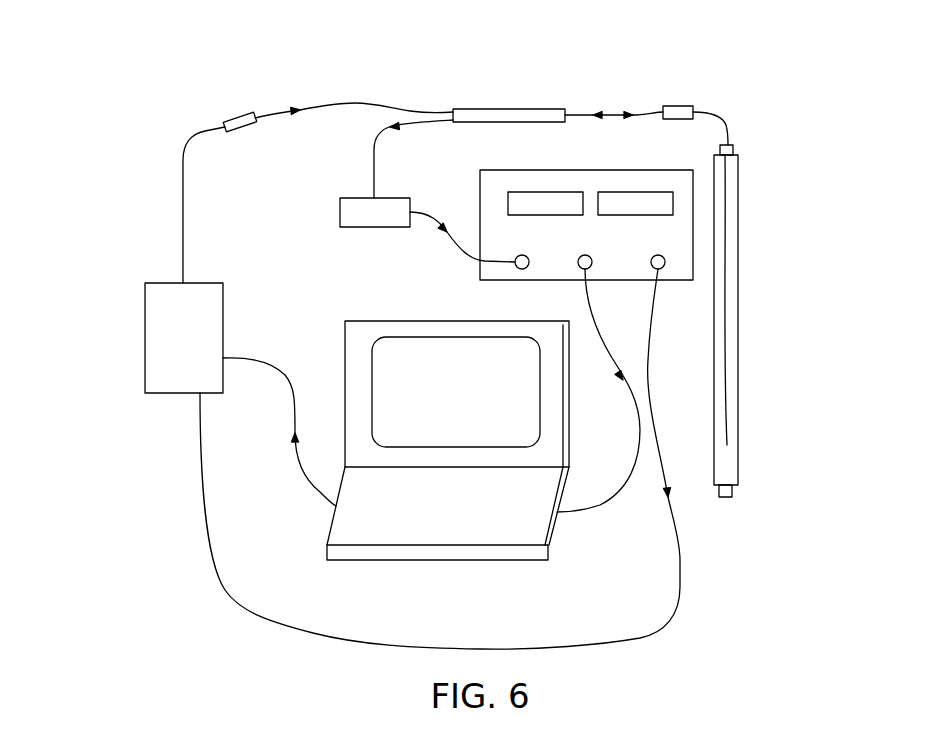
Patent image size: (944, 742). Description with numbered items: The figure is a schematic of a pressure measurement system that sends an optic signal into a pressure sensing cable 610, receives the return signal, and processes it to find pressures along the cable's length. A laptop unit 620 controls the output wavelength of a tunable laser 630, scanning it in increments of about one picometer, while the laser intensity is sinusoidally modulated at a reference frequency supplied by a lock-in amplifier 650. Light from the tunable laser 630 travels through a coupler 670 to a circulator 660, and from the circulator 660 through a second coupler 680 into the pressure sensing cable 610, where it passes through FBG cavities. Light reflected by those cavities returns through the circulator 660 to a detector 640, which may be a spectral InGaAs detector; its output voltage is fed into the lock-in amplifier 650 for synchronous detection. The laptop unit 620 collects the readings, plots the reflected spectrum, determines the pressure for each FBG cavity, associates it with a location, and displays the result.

The pressure sensing cable 610 is at (731, 392).
The laptop unit 620 is at (467, 560).
The tunable laser 630 is at (145, 335).
The detector 640 is at (340, 205).
The lock-in amplifier 650 is at (677, 285).
The circulator 660 is at (508, 109).
The coupler 670 is at (240, 116).
The coupler 680 is at (677, 106).